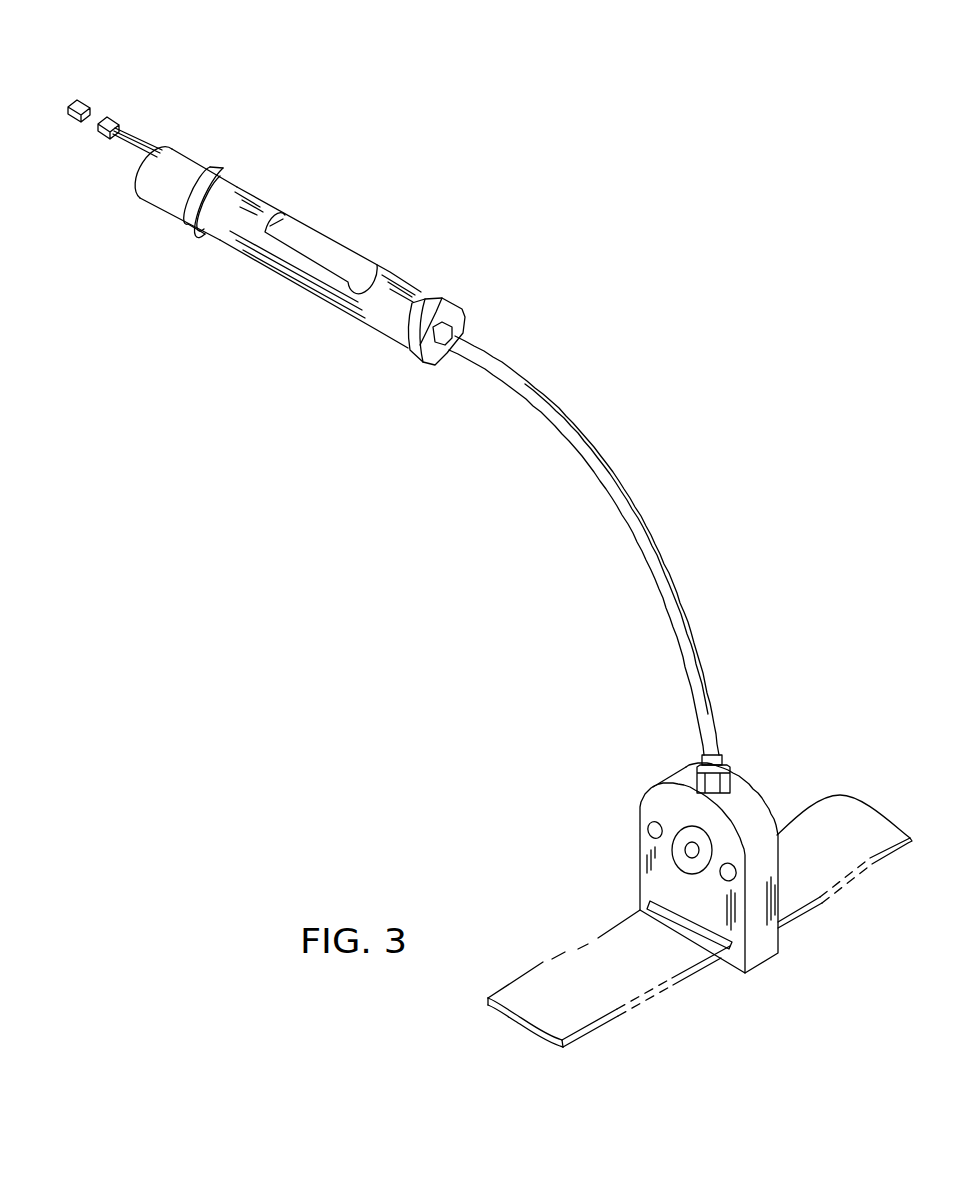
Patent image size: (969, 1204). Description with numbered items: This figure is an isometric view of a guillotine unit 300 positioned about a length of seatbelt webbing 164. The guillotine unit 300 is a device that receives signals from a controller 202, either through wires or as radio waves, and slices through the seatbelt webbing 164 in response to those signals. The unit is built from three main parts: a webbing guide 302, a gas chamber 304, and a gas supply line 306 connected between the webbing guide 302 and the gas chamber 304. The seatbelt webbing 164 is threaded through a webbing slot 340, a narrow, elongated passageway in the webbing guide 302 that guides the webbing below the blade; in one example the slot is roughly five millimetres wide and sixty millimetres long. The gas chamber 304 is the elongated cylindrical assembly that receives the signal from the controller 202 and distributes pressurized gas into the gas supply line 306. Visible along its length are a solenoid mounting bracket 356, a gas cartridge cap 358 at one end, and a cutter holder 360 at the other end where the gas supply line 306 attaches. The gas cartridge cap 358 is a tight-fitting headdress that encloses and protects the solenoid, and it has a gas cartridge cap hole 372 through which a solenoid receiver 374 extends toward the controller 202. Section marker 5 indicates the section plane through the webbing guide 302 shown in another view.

The guillotine unit 300 is at (692, 292).
The webbing guide 302 is at (748, 803).
The gas chamber 304 is at (407, 280).
The gas supply line 306 is at (620, 467).
The webbing slot 340 is at (640, 908).
The solenoid mounting bracket 356 is at (224, 176).
The gas cartridge cap 358 is at (167, 200).
The cutter holder 360 is at (460, 305).
The gas cartridge cap hole 372 is at (162, 148).
The solenoid receiver 374 is at (138, 130).
The controller 202 is at (118, 51).
The seatbelt webbing 164 is at (822, 875).
The section line 5- 5 is at (712, 748).